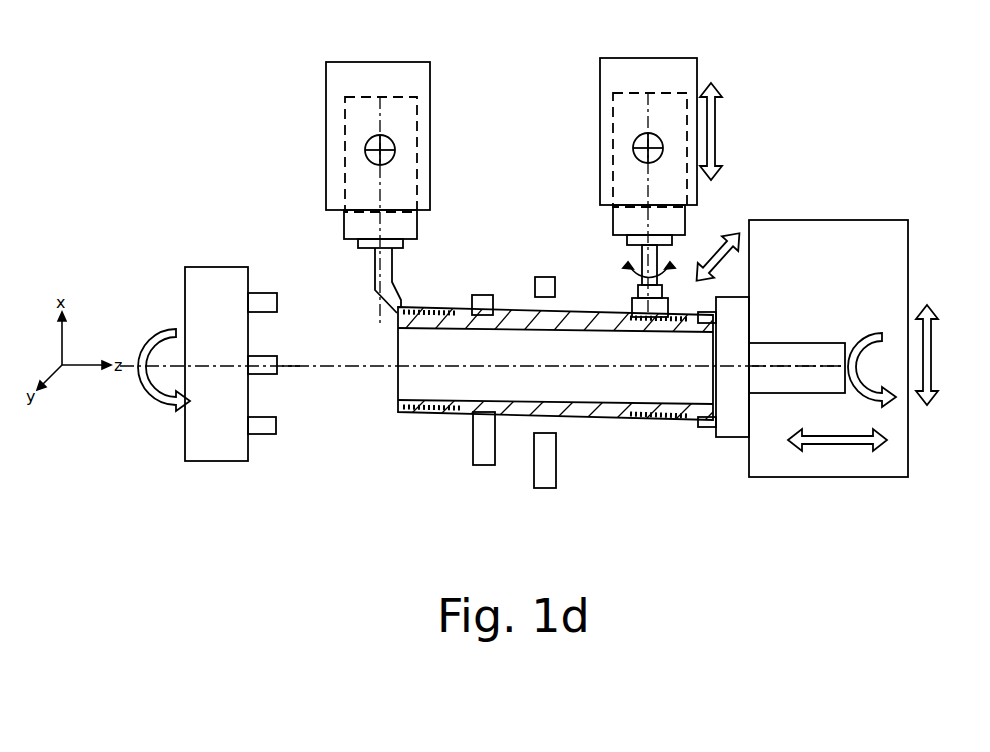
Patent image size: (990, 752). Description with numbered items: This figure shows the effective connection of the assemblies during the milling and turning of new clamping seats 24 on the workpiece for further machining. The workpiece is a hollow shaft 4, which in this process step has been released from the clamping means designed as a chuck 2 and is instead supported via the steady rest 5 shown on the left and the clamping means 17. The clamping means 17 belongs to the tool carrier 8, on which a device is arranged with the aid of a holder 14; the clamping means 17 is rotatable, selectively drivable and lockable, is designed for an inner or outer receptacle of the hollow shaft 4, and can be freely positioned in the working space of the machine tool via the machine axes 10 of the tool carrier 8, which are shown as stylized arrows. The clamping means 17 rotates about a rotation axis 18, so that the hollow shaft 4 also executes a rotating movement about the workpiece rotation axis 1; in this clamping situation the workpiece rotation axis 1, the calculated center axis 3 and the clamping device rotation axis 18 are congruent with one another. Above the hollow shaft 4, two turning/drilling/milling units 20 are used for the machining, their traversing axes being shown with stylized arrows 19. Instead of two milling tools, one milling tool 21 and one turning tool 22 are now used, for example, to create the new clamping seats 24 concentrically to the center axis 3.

The workpiece rotation axis 1 is at (285, 365).
The chuck 2 is at (200, 290).
The center axis 3 is at (295, 364).
The hollow shaft 4 is at (442, 413).
The steady rest 5 is at (482, 307).
The tool carrier 8 is at (776, 250).
The machine axes 10 is at (857, 440).
The holder 14 is at (818, 352).
The clamping means 17 is at (736, 400).
The rotation axis 18 is at (793, 367).
The traversing axes 19 is at (728, 236).
The turning/drilling/milling unit 20 is at (615, 83).
The milling tool 21 is at (648, 272).
The turning tool 22 is at (382, 275).
The clamping seats 24 is at (438, 413).